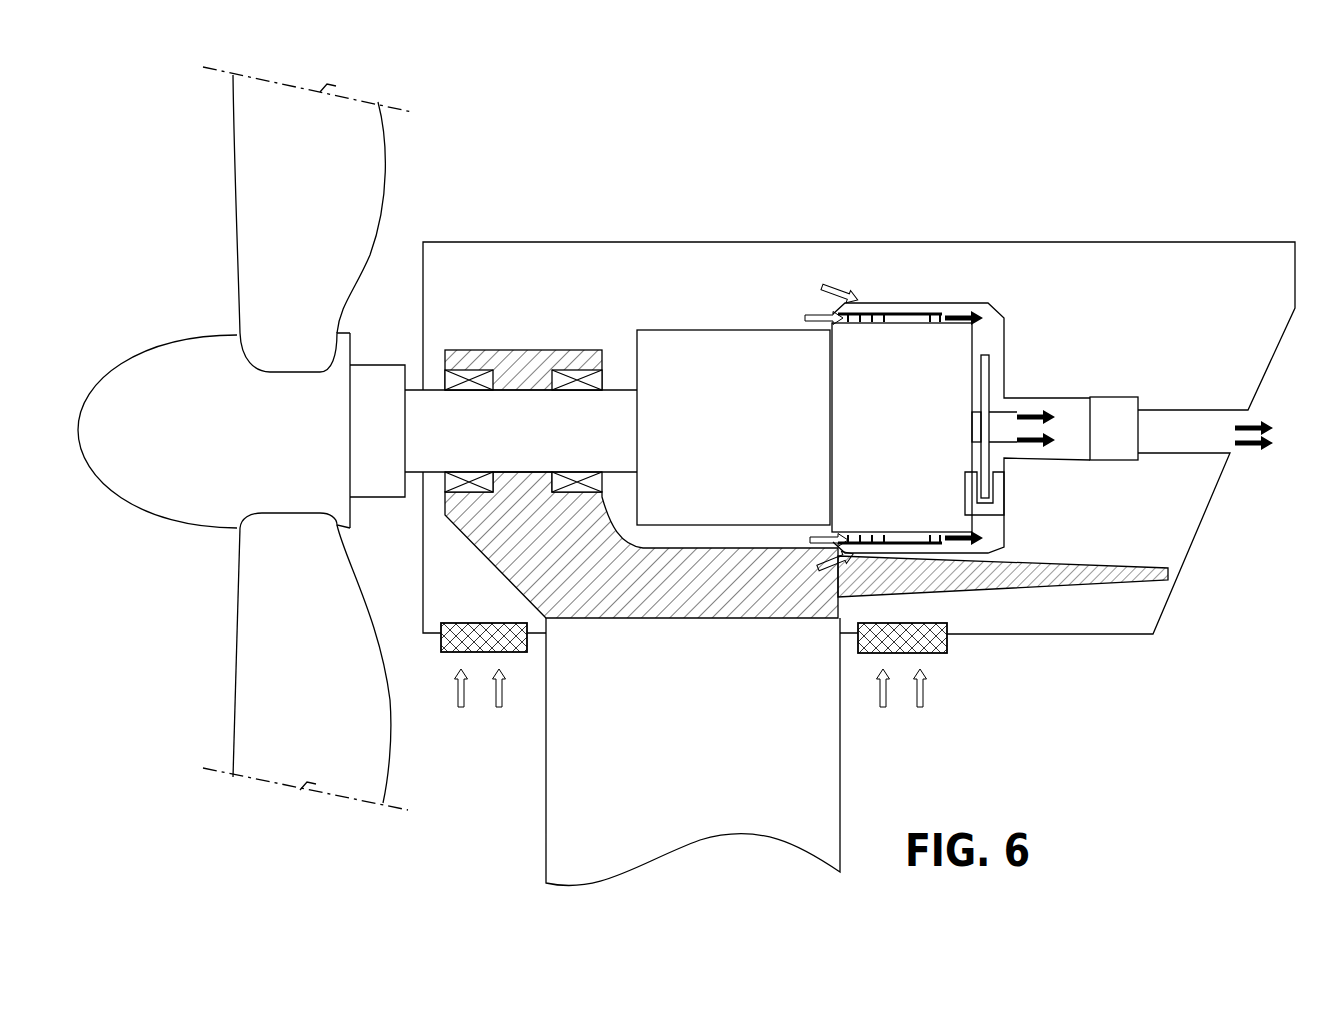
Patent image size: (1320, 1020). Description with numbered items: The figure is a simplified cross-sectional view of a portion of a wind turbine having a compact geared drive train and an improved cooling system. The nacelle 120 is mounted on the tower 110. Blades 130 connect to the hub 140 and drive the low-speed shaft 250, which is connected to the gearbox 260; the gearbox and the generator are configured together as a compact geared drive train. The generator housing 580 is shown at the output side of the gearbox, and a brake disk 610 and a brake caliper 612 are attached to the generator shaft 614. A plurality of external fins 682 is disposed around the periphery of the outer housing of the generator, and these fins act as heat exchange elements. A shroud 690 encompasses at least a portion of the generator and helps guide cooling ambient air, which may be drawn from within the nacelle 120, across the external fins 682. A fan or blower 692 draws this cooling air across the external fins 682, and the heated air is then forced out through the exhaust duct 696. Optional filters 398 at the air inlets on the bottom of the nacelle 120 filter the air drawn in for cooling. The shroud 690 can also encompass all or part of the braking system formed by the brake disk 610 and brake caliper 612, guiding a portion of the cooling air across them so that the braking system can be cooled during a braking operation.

The tower 110 is at (714, 751).
The nacelle 120 is at (528, 242).
The blades 130 is at (272, 193).
The hub 140 is at (235, 443).
The low-speed shaft 250 is at (536, 443).
The gearbox 260 is at (758, 443).
The filters 398 is at (452, 653).
The power electronics housing 580 is at (925, 443).
The brake disk 610 is at (989, 370).
The brake caliper 612 is at (998, 493).
The generator shaft 614 is at (1032, 440).
The external fins 682 is at (872, 303).
The shroud 690 is at (930, 303).
The fan or blower 692 is at (1122, 397).
The exhaust duct 696 is at (1200, 453).